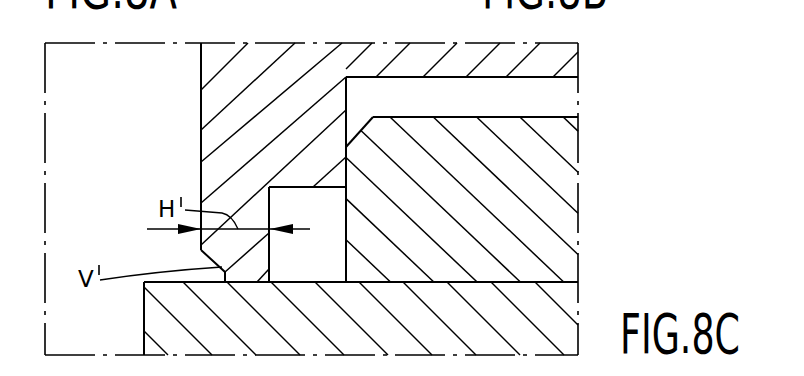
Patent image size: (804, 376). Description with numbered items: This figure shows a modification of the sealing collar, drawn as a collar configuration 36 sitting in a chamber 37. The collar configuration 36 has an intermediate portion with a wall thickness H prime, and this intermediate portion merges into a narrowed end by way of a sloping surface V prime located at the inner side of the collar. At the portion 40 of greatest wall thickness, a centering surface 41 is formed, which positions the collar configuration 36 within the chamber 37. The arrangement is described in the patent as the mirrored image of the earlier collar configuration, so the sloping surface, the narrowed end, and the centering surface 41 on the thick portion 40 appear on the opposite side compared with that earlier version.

The collar configuration 36 is at (231, 162).
The chamber 37 is at (197, 263).
The portion of greatest wall thickness 40 is at (335, 107).
The centering surface 41 is at (349, 135).